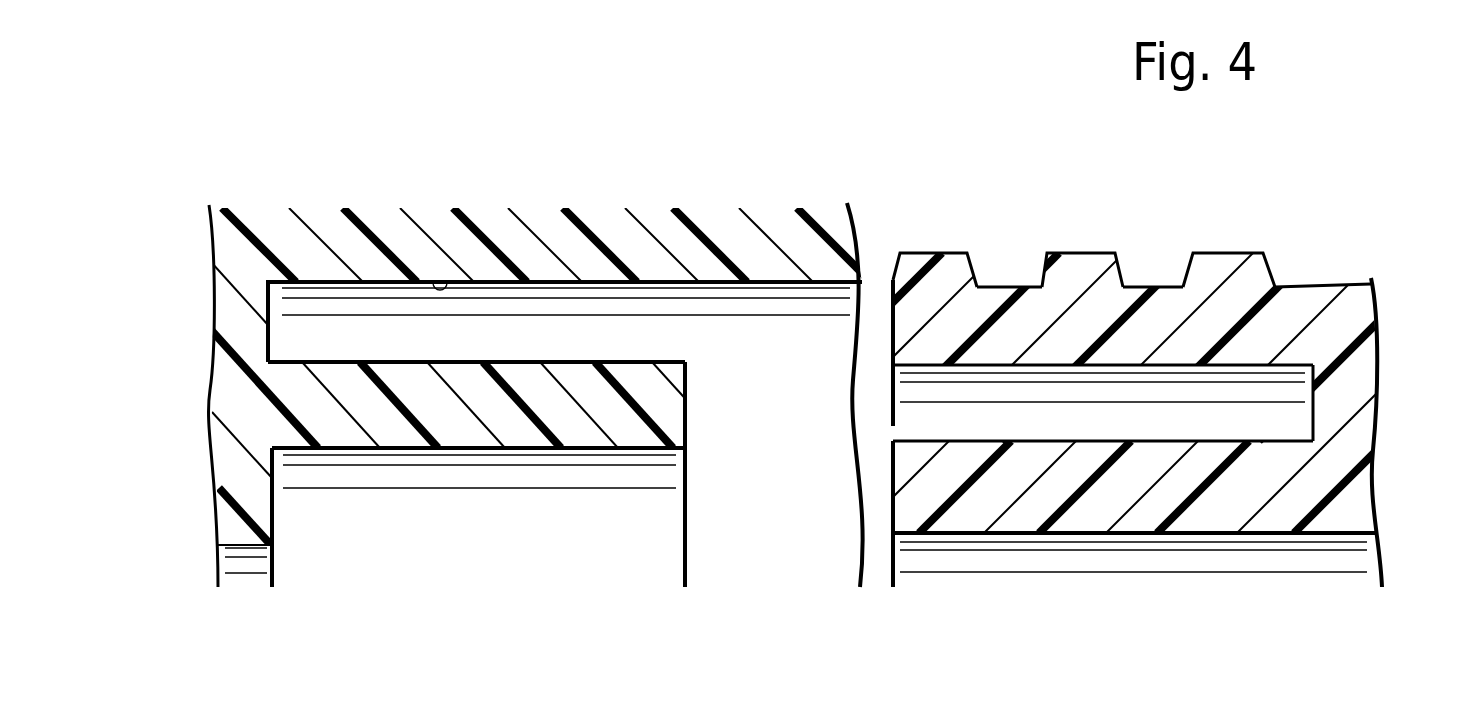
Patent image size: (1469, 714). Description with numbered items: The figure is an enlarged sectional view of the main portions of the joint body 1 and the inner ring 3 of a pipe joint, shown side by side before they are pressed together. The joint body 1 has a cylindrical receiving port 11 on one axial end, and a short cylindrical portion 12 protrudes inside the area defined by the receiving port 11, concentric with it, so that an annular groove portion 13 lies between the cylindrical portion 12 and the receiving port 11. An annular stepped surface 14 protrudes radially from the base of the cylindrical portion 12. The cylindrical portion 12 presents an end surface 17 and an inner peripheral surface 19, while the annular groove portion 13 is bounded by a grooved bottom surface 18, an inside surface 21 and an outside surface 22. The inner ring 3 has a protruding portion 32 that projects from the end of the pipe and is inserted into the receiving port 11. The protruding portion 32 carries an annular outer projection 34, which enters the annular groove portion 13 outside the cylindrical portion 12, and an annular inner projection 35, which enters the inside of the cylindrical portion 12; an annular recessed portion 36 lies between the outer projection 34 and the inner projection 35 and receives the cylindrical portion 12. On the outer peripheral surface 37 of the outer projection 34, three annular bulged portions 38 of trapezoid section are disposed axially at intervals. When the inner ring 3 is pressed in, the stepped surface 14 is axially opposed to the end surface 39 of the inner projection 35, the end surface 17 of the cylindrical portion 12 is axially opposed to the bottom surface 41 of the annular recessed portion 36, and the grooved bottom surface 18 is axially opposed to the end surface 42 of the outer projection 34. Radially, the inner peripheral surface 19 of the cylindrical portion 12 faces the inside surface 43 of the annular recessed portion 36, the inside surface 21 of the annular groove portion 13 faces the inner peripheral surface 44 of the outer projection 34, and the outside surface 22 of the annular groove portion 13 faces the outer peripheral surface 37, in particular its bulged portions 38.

The joint body 1 is at (214, 381).
The inner ring 3 is at (1374, 418).
The receiving port 11 is at (774, 220).
The cylindrical portion 12 is at (519, 404).
The annular groove portion 13 is at (500, 244).
The stepped surface 14 is at (478, 517).
The end surface of the cylindrical portion 17 is at (688, 372).
The grooved bottom surface 18 is at (269, 310).
The inner peripheral surface of the cylindrical portion 19 is at (467, 450).
The inside surface of the annular groove portion 21 is at (531, 356).
The outside surface of the annular groove portion 22 is at (441, 283).
The protruding portion 32 is at (1324, 292).
The outer projection 34 is at (999, 291).
The inner projection 35 is at (970, 530).
The annular recessed portion 36 is at (1159, 499).
The outer peripheral surface of the outer projection 37 is at (1167, 285).
The bulged portions 38 is at (917, 253).
The end surface of the inner projection 39 is at (900, 508).
The bottom surface of the annular recessed portion 41 is at (1303, 402).
The end surface of the outer projection 42 is at (893, 324).
The inside surface of the annular recessed portion 43 is at (1103, 437).
The inner peripheral surface of the outer projection 44 is at (1103, 499).